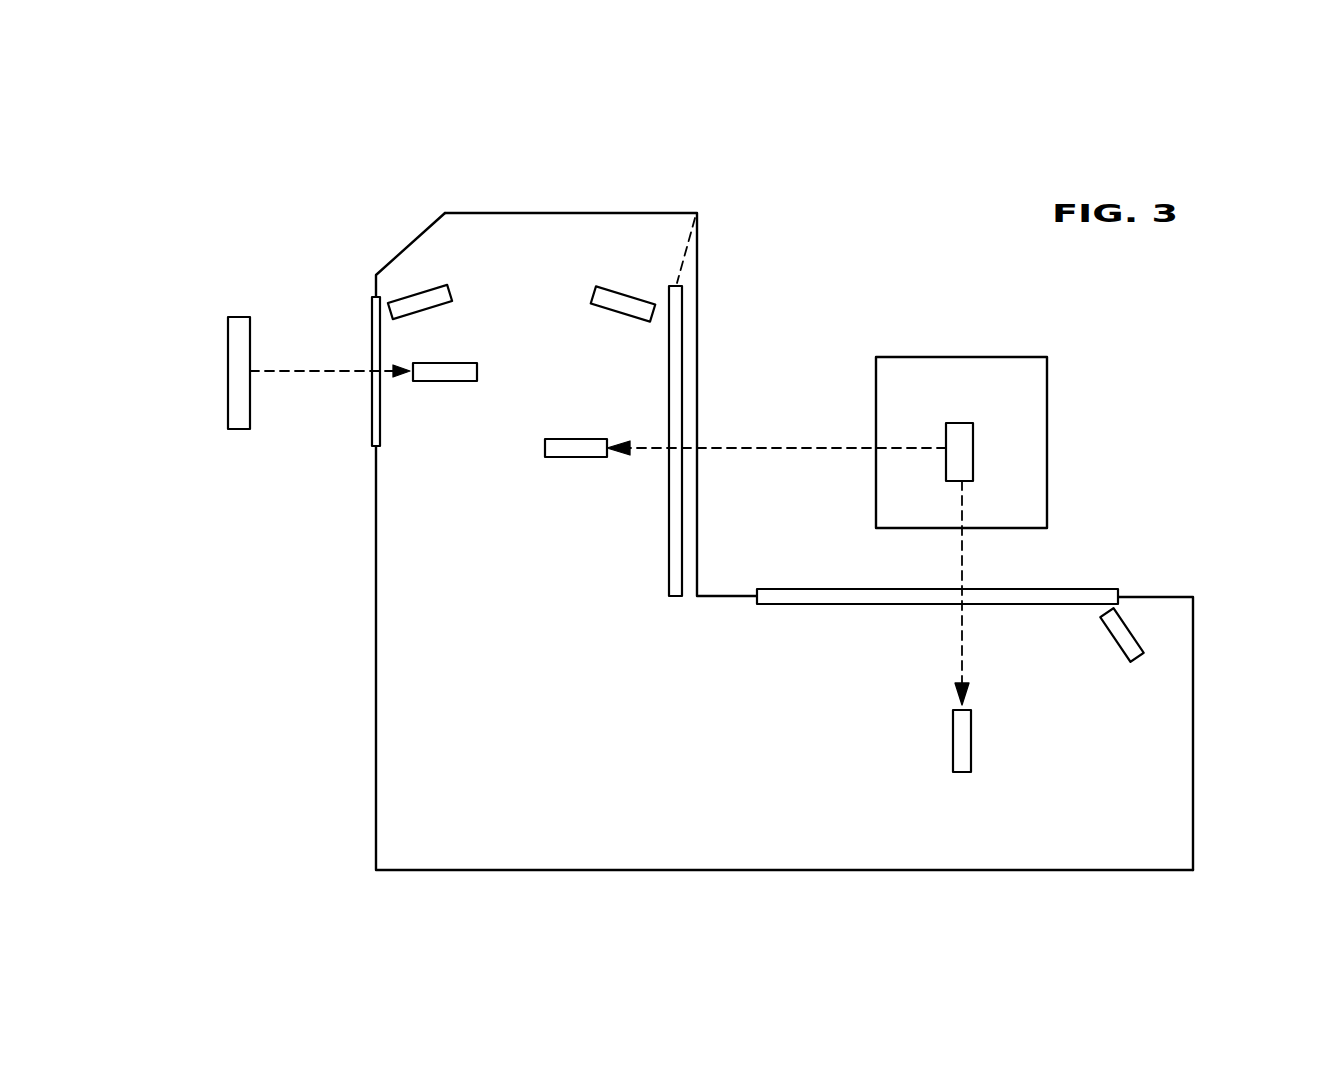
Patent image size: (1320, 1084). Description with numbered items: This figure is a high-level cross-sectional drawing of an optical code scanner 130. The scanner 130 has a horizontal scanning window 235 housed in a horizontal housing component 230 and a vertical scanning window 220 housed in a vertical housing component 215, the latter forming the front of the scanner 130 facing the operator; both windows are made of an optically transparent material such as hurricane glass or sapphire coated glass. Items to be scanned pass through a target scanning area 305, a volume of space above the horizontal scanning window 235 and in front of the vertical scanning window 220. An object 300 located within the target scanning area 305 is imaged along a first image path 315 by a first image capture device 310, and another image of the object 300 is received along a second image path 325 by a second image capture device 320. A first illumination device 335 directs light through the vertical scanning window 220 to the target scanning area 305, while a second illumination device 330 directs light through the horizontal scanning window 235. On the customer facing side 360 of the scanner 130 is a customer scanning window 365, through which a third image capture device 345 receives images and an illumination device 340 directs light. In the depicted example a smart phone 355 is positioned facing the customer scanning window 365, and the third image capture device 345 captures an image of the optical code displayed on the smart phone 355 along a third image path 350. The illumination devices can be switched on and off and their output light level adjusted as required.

The optical code scanner 130 is at (296, 140).
The vertical housing component 215 is at (665, 213).
The vertical scanning window 220 is at (670, 285).
The horizontal housing component 230 is at (1170, 597).
The horizontal scanning window 235 is at (1056, 589).
The object 300 is at (973, 463).
The target scanning area 305 is at (963, 357).
The first image capture device 310 is at (573, 457).
The first image path 315 is at (768, 448).
The second image capture device 320 is at (953, 753).
The second image path 325 is at (958, 640).
The second illumination device 330 is at (1143, 638).
The first illumination device 335 is at (620, 313).
The illumination device 340 is at (452, 293).
The third image capture device 345 is at (442, 381).
The third image path 350 is at (317, 373).
The smart phone 355 is at (228, 350).
The customer facing side 360 is at (376, 622).
The customer scanning window 365 is at (372, 325).